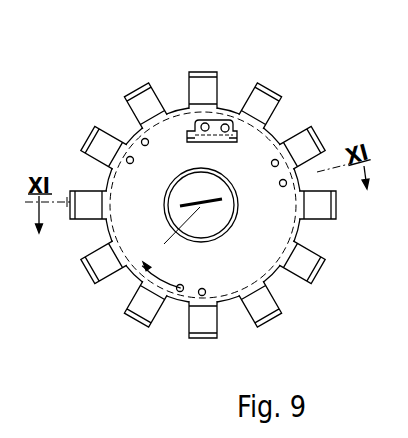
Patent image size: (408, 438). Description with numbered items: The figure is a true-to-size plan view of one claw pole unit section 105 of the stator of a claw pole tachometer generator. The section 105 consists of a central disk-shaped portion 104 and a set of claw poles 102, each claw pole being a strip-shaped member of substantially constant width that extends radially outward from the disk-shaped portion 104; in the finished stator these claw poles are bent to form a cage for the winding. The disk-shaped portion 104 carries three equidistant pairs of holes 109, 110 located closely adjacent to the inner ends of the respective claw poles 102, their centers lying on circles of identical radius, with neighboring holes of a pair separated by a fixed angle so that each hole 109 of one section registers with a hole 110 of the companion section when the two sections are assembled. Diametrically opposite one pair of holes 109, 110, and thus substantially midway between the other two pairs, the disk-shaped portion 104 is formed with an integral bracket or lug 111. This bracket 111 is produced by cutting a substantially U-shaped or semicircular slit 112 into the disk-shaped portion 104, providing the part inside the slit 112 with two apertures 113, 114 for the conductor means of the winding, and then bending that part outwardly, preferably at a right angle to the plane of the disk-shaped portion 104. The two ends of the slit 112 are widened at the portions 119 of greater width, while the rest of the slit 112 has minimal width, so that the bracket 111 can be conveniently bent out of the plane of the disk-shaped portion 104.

The claw poles 102 is at (192, 342).
The disk-shaped portion 104 is at (270, 229).
The first section 105 is at (118, 290).
The holes 109 is at (205, 290).
The holes 110 is at (181, 284).
The bracket or lug 111 is at (219, 120).
The slit 112 is at (193, 126).
The aperture 113 is at (254, 106).
The aperture 114 is at (208, 116).
The widened end portions of the slit 119 is at (236, 130).